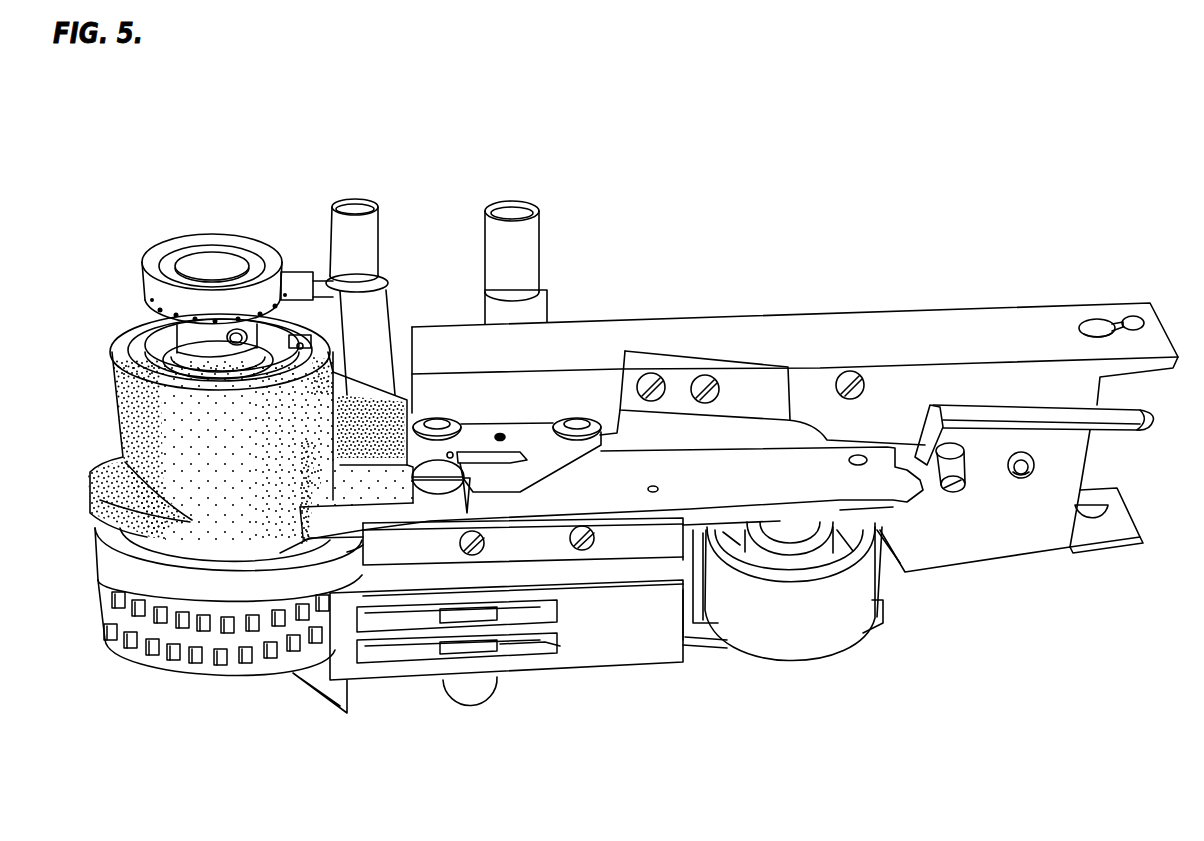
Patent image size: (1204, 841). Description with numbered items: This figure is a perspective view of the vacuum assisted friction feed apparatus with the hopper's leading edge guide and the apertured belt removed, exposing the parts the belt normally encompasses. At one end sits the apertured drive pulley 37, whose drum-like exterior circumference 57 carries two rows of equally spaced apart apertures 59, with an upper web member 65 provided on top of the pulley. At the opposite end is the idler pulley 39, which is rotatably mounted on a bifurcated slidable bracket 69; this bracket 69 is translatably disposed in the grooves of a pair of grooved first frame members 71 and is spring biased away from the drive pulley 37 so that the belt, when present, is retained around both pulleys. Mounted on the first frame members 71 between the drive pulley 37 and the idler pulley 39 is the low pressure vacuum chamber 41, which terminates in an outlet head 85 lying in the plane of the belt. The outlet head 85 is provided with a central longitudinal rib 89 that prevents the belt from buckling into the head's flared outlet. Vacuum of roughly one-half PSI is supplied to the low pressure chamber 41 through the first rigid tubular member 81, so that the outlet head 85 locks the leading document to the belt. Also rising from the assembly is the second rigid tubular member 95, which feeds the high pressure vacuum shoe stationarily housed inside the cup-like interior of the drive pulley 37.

The second rigid tubular member 95 is at (357, 208).
The first rigid tubular member 81 is at (518, 213).
The first frame members 71 is at (684, 470).
The upper web member 65 is at (228, 597).
The apertures 59 is at (160, 617).
The apertured drive pulley 37 is at (215, 677).
The drum-like exterior circumference 57 is at (238, 642).
The central longitudinal rib 89 is at (420, 638).
The outlet head 85 is at (488, 657).
The low pressure vacuum chamber 41 is at (610, 568).
The bifurcated slidable bracket 69 is at (703, 642).
The idler pulley 39 is at (823, 640).